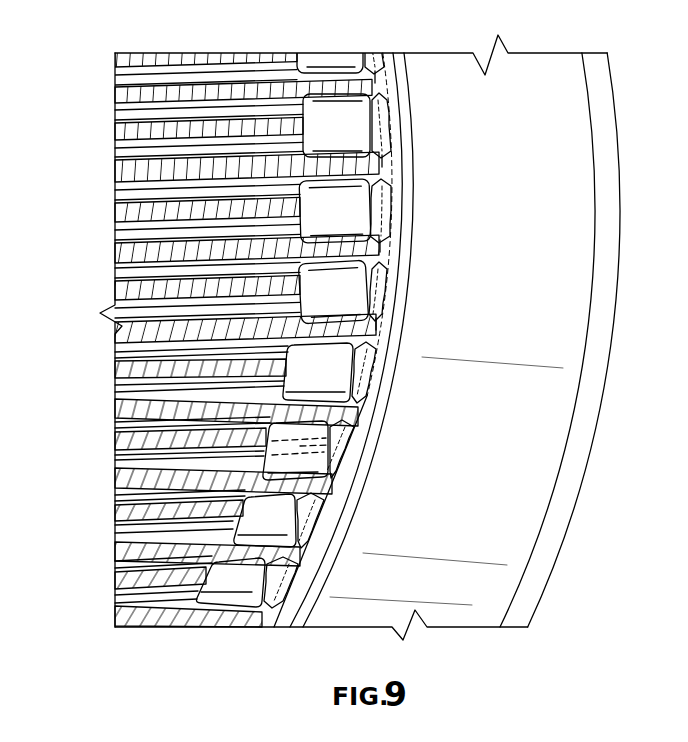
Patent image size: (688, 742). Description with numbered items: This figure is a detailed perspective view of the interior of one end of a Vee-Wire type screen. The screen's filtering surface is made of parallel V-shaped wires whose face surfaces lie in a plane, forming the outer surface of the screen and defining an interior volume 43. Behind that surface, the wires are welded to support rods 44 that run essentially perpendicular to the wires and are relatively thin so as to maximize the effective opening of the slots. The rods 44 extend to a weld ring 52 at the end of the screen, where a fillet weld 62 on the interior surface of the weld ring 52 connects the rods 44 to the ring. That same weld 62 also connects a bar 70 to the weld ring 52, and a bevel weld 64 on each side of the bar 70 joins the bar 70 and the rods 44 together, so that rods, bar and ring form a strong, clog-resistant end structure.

The interior volume 43 is at (263, 88).
The support rods 44 is at (130, 357).
The weld ring 52 is at (462, 273).
The fillet weld 62 is at (392, 167).
The bevel weld 64 is at (318, 443).
The bar 70 is at (332, 450).